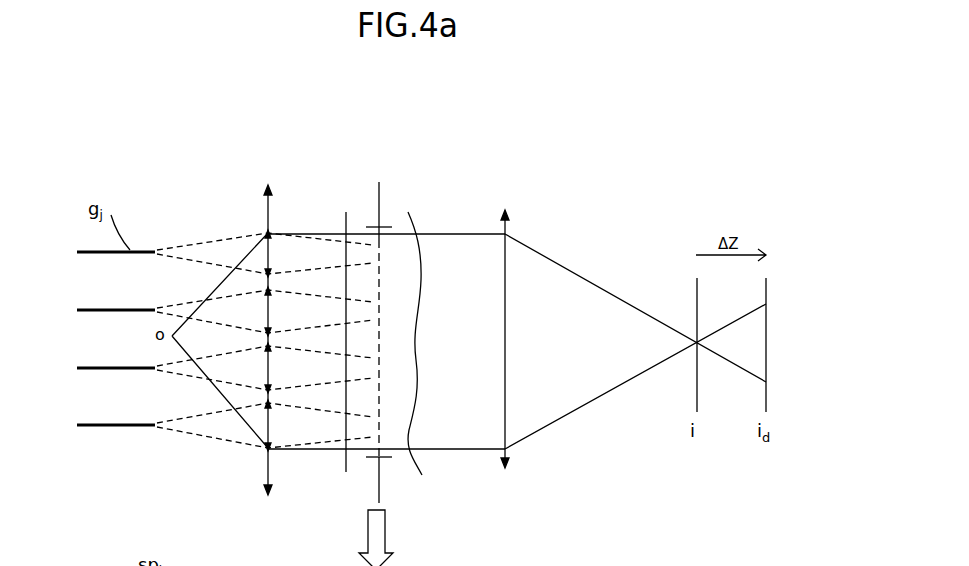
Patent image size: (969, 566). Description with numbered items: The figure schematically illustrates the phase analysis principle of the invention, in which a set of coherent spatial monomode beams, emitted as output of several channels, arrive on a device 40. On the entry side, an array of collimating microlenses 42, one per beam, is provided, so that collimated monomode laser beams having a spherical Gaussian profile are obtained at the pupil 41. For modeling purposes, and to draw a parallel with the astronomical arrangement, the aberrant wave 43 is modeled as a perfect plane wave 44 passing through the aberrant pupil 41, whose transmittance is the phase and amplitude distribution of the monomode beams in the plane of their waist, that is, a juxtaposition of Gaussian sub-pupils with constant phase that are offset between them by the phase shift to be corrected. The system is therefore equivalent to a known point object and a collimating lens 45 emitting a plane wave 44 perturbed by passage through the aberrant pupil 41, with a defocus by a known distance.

The device 40 is at (376, 138).
The pupil 41 is at (367, 227).
The collimating microlenses 42 is at (274, 232).
The aberrant wave 43 is at (415, 218).
The plane wave 44 is at (345, 473).
The collimating lens 45 is at (263, 205).